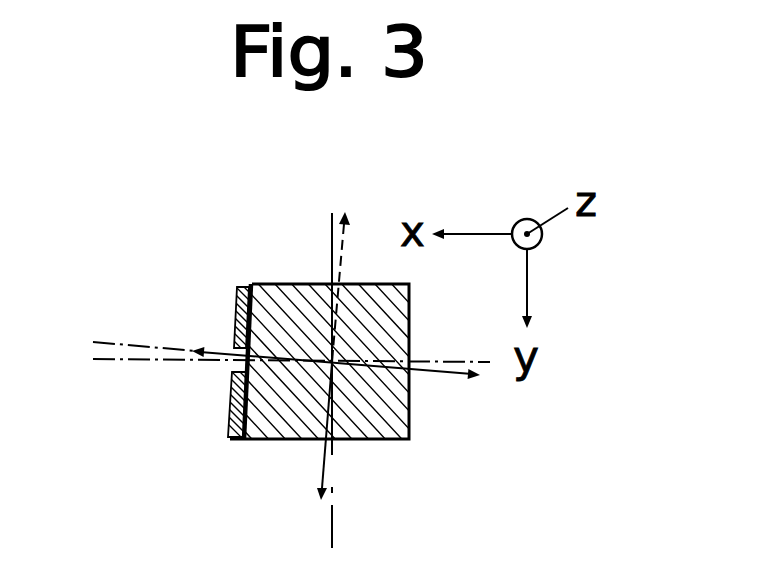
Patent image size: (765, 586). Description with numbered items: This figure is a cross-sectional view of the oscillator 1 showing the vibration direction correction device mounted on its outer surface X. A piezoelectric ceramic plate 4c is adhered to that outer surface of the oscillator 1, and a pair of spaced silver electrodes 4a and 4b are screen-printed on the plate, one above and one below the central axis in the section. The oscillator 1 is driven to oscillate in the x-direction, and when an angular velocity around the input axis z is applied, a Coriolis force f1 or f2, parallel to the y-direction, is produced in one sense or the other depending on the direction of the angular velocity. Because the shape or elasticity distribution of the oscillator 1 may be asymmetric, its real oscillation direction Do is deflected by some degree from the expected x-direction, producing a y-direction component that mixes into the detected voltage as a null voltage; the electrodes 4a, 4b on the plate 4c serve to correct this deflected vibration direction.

The oscillator 1 is at (300, 283).
The silver electrode 4a is at (233, 303).
The silver electrode 4b is at (227, 413).
The piezoelectric ceramic plate 4c is at (245, 283).
The deflected oscillation direction Do is at (218, 350).
The Coriolis force f1 is at (308, 445).
The Coriolis force f2 is at (356, 260).